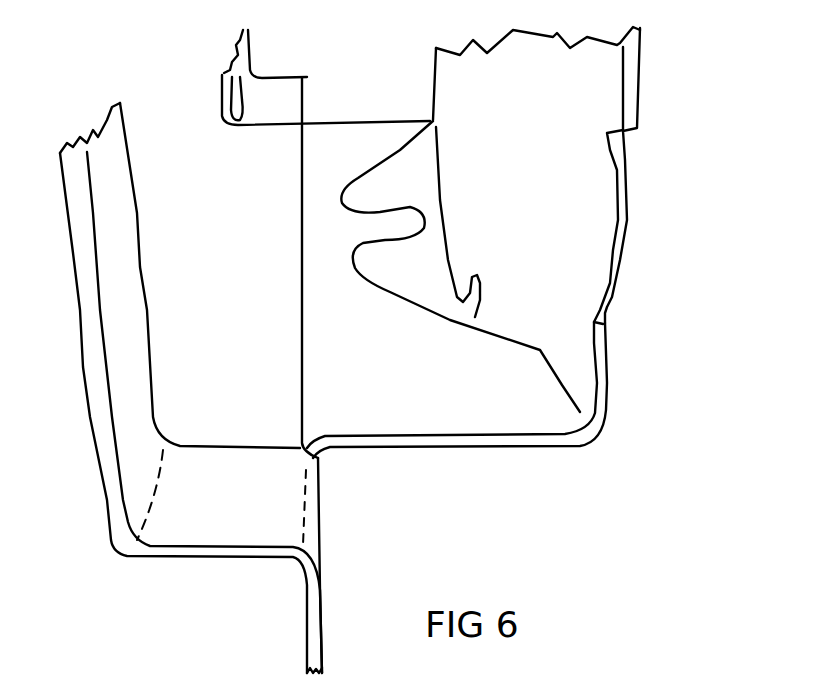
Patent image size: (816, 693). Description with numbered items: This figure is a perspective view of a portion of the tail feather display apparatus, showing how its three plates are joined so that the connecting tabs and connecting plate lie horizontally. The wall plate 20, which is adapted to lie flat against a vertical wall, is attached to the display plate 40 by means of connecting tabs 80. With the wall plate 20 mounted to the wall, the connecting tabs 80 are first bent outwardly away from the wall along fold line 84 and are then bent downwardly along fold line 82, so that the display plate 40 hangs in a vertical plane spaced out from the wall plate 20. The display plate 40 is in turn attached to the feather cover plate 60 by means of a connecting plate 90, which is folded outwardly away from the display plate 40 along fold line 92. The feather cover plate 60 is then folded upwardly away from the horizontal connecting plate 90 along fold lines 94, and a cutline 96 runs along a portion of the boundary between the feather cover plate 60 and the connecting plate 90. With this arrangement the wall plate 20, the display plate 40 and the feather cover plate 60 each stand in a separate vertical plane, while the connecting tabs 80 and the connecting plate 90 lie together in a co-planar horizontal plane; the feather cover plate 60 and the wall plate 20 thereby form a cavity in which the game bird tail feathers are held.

The wall plate 20 is at (110, 333).
The display plate 40 is at (322, 622).
The feather cover plate 60 is at (590, 118).
The connecting tabs 80 is at (284, 100).
The fold line 82 is at (303, 503).
The fold line 84 is at (143, 520).
The connecting plate 90 is at (445, 393).
The fold line 92 is at (303, 277).
The fold lines 94 is at (430, 120).
The cutline 96 is at (372, 170).